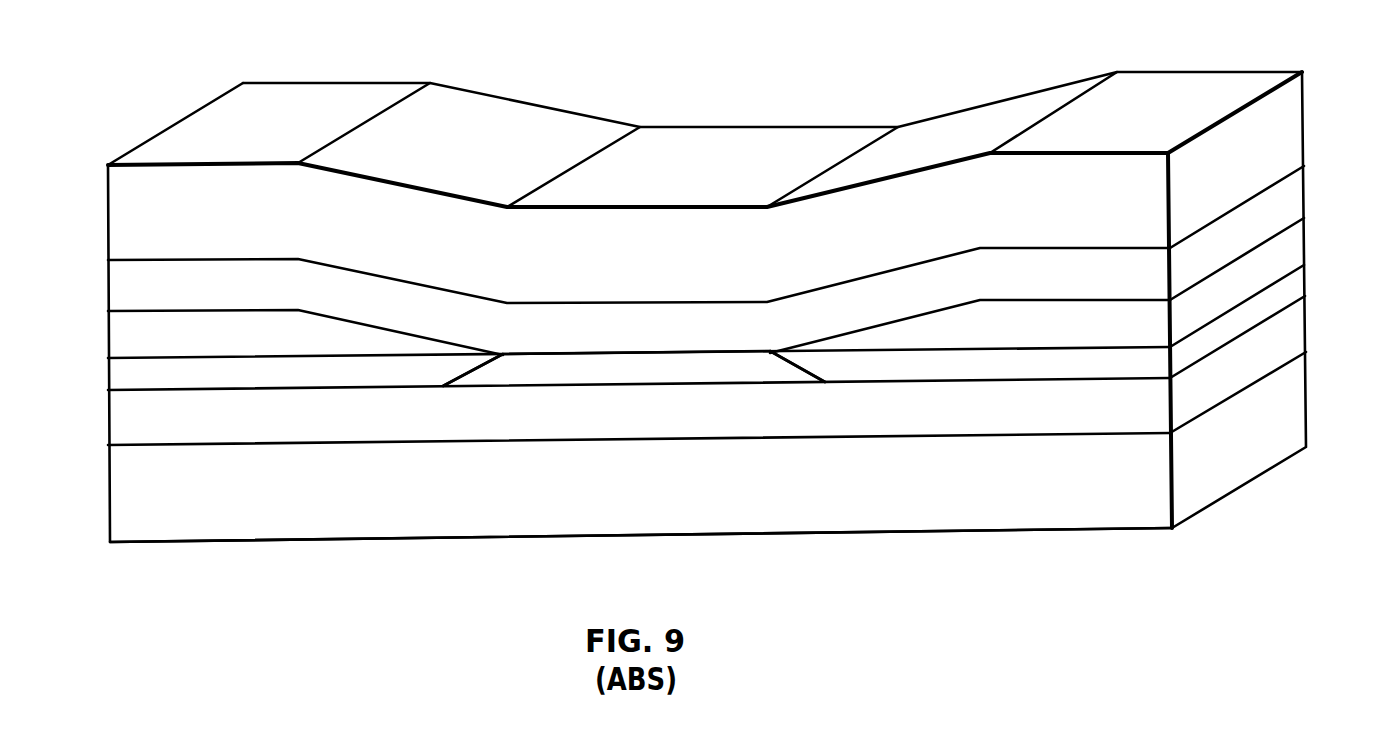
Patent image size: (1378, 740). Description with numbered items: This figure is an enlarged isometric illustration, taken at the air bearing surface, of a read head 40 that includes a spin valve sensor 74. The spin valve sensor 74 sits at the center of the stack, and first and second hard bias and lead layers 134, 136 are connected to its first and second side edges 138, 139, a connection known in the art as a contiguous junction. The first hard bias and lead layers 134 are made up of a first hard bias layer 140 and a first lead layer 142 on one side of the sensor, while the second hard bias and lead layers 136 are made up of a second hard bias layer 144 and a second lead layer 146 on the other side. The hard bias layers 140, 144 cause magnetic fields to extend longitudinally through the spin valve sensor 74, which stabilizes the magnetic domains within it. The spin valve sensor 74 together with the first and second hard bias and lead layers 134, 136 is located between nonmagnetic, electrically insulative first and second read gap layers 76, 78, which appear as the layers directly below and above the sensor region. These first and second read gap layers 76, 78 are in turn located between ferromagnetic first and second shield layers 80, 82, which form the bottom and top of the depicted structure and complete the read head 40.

The read head 40 is at (768, 93).
The spin valve sensor 74 is at (543, 353).
The first read gap layer 76 is at (502, 427).
The second read gap layer 78 is at (400, 297).
The first shield layer 80 is at (227, 520).
The second shield layer 82 is at (538, 125).
The first hard bias and lead layers 134 is at (102, 315).
The second hard bias and lead layers 136 is at (1313, 213).
The first side edge 138 is at (463, 378).
The second side edge 139 is at (806, 372).
The first hard bias layer 140 is at (138, 373).
The first lead layer 142 is at (140, 333).
The second hard bias layer 144 is at (1105, 362).
The second lead layer 146 is at (1110, 323).